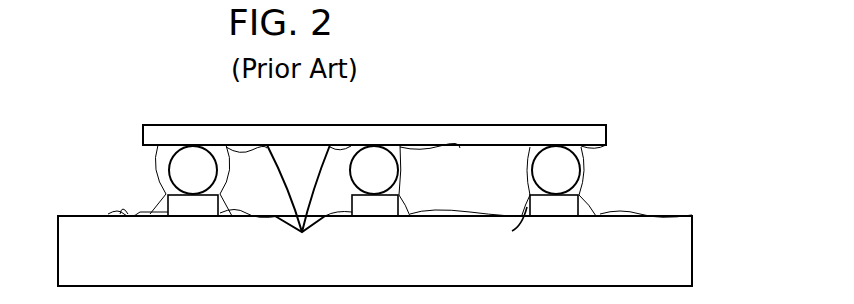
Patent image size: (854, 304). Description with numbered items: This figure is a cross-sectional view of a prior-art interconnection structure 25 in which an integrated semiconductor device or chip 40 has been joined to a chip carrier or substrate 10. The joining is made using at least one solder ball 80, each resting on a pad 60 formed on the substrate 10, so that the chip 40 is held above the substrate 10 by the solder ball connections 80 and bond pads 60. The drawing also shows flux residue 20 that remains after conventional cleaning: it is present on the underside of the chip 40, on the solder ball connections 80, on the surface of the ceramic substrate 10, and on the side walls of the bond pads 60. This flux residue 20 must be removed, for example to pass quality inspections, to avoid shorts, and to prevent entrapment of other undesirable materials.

The substrate 10 is at (667, 253).
The flux residue 20 is at (512, 231).
The interconnection structure 25 is at (603, 111).
The chip 40 is at (398, 125).
The pad 60 is at (194, 203).
The solder ball 80 is at (560, 170).